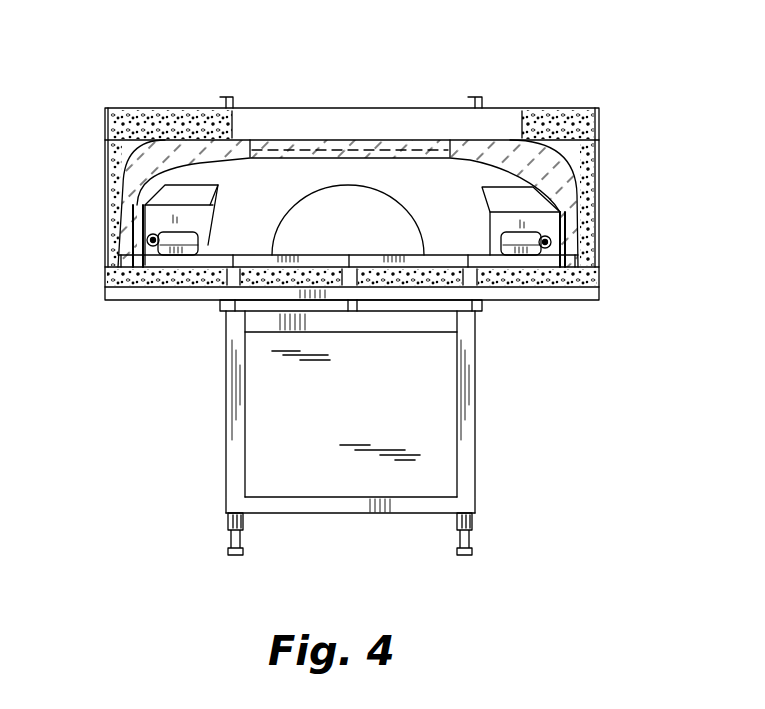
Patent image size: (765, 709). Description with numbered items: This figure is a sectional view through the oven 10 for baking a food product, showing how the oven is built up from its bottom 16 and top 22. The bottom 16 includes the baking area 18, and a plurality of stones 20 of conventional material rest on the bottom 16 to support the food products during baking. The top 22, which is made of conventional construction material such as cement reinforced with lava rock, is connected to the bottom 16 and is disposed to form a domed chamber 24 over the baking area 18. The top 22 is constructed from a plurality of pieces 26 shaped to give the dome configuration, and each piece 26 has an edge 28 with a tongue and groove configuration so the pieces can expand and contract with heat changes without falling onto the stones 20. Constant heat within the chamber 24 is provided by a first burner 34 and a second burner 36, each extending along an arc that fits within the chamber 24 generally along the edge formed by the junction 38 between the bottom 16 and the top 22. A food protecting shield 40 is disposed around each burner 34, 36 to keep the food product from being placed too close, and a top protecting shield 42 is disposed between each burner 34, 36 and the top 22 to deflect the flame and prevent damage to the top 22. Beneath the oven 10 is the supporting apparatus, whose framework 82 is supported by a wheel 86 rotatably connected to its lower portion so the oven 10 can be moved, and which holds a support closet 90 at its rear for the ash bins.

The oven 10 is at (112, 98).
The bottom 16 is at (602, 292).
The baking area 18 is at (273, 247).
The stones 20 is at (222, 255).
The top 22 is at (590, 109).
The domed chamber 24 is at (348, 185).
The pieces 26 is at (245, 140).
The edge 28 is at (272, 155).
The first burner 34 is at (545, 218).
The second burner 36 is at (150, 215).
The junction 38 is at (140, 250).
The food protecting shield 40 is at (217, 210).
The top protecting shield 42 is at (190, 185).
The framework 82 is at (225, 408).
The wheel 86 is at (243, 550).
The support closet 90 is at (362, 400).